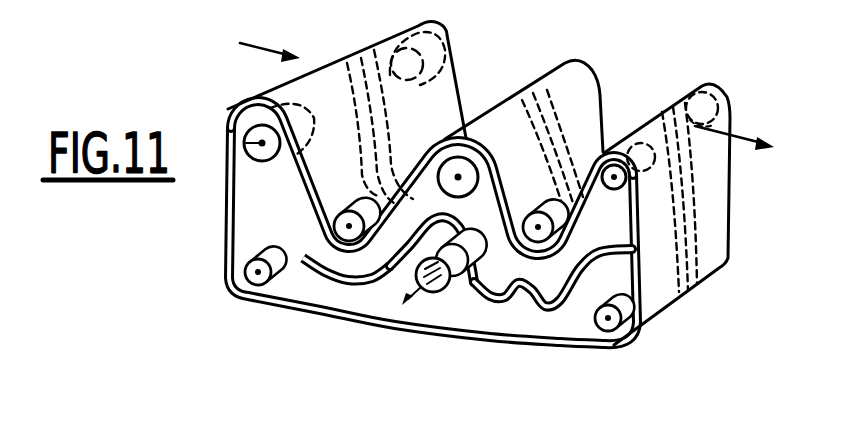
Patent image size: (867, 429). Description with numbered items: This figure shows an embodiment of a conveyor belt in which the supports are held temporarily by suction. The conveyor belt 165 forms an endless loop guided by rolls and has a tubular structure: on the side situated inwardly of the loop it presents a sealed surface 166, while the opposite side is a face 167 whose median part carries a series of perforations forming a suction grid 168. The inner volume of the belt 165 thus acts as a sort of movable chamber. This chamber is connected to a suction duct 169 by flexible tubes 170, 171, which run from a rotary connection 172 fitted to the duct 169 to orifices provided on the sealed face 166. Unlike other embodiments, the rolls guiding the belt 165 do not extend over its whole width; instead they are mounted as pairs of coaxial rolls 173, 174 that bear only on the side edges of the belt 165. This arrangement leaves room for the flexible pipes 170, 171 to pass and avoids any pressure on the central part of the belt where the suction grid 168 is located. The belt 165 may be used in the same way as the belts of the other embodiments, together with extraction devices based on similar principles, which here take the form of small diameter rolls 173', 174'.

The conveyor belt 165 is at (712, 228).
The sealed surface 166 is at (352, 300).
The face 167 is at (440, 100).
The suction grid 168 is at (373, 48).
The suction duct 169 is at (433, 296).
The flexible tube 170 is at (318, 272).
The flexible tube 171 is at (580, 278).
The rotary connection 172 is at (473, 284).
The coaxial roll 173 is at (418, 238).
The small diameter roll 173' is at (631, 133).
The coaxial roll 174 is at (443, 43).
The small diameter roll 174' is at (724, 81).